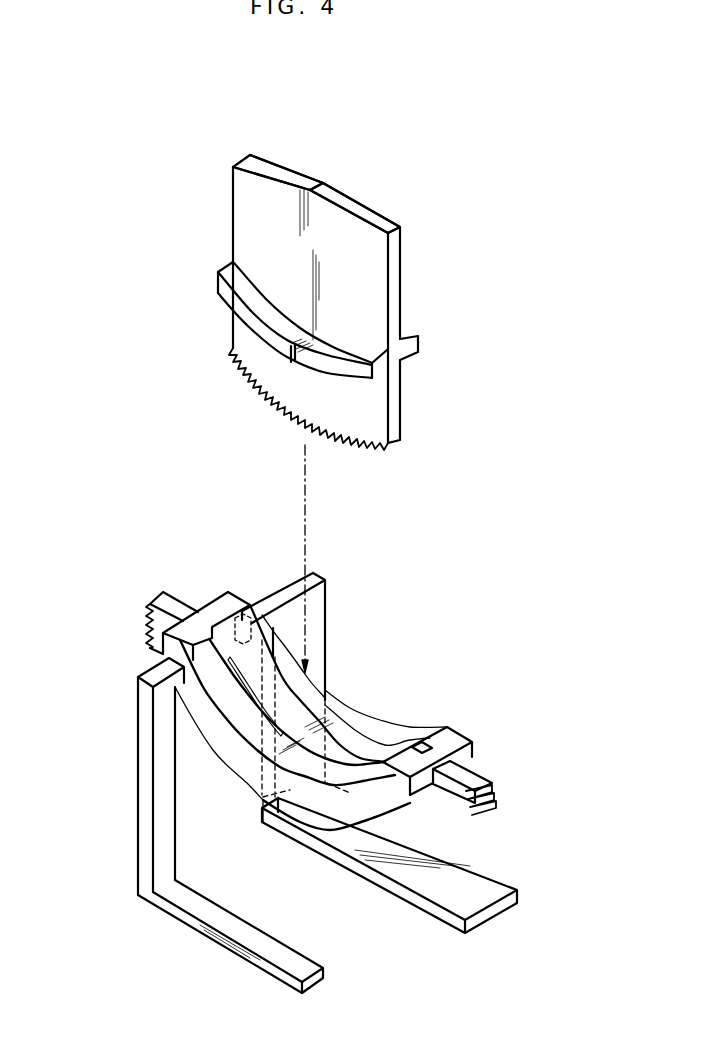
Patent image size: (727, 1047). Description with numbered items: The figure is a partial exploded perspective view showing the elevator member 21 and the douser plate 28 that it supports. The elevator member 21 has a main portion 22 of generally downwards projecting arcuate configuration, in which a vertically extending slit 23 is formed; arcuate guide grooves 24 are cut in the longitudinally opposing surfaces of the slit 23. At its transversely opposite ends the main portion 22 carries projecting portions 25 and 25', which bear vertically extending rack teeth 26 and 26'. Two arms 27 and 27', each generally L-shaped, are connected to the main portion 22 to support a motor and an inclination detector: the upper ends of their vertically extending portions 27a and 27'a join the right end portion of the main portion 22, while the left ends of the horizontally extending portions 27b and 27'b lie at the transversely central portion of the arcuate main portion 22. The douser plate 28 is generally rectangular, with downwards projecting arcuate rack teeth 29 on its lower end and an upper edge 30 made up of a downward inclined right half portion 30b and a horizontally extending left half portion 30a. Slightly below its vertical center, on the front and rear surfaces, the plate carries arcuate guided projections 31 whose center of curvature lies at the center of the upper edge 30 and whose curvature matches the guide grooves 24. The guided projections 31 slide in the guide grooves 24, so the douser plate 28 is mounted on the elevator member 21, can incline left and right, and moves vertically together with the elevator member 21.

The elevator member 21 is at (430, 690).
The main portion 22 is at (228, 748).
The slit 23 is at (358, 762).
The arcuate guide grooves 24 is at (317, 687).
The projecting portion 25 is at (494, 751).
The projecting portion 25' is at (183, 594).
The rack teeth 26 is at (523, 771).
The rack teeth 26' is at (105, 626).
The arm 27 is at (97, 786).
The vertically extending portion 27a is at (167, 838).
The horizontally extending portion 27b is at (263, 942).
The arm 27' is at (332, 636).
The vertically extending portion 27'a is at (386, 687).
The horizontally extending portion 27'b is at (429, 850).
The douser plate 28 is at (380, 302).
The arcuate rack teeth 29 is at (357, 447).
The upper edge 30 is at (393, 217).
The left half portion 30a is at (358, 207).
The right half portion 30b is at (280, 170).
The guided projections 31 is at (277, 327).